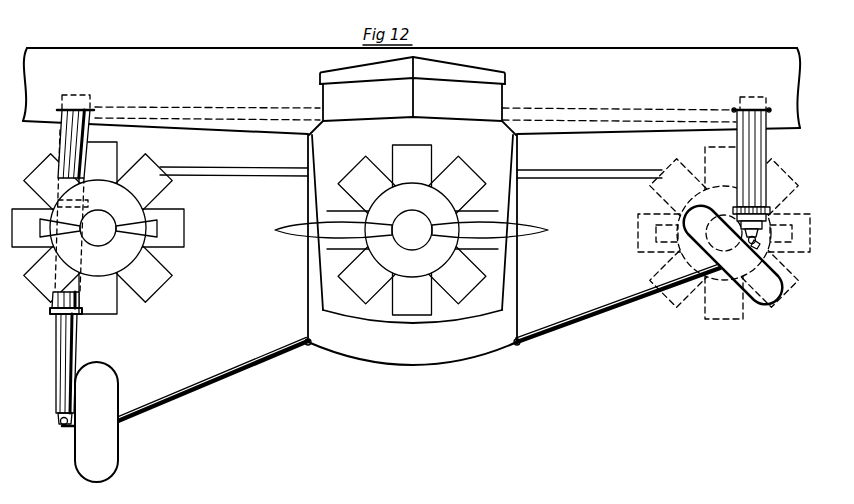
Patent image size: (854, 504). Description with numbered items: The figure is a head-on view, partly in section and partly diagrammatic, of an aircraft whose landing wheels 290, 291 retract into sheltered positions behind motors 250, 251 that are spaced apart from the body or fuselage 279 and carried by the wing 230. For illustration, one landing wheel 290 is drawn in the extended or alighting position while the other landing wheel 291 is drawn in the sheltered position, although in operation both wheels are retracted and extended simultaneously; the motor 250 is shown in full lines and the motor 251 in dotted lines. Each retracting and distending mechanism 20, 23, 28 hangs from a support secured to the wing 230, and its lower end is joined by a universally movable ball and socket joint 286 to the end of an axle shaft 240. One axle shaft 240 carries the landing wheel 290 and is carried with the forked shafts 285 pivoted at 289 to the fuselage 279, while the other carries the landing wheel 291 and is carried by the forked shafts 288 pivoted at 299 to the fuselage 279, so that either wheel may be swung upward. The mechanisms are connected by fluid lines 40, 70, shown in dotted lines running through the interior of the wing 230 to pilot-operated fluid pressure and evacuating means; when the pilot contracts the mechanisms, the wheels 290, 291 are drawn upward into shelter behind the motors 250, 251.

The retracting and distending mechanism 20 is at (60, 137).
The retracting and distending mechanism 23 is at (55, 300).
The retracting and distending mechanism 28 is at (60, 370).
The fluid line 40 is at (205, 108).
The fluid line 70 is at (228, 121).
The wing 230 is at (208, 70).
The axle shaft 240 is at (73, 435).
The motor 250 is at (158, 272).
The motor 251 is at (709, 314).
The body or fuselage 279 is at (390, 352).
The forked shafts 285 is at (268, 366).
The ball and socket joint 286 is at (59, 424).
The forked shafts 288 is at (573, 332).
The pivot 289 is at (311, 345).
The landing wheel 290 is at (105, 464).
The landing wheel 291 is at (762, 300).
The pivot 299 is at (514, 344).